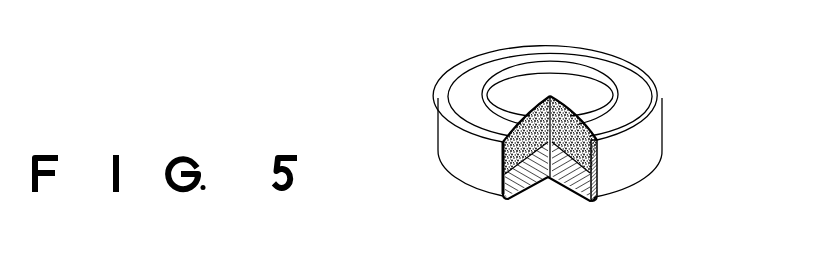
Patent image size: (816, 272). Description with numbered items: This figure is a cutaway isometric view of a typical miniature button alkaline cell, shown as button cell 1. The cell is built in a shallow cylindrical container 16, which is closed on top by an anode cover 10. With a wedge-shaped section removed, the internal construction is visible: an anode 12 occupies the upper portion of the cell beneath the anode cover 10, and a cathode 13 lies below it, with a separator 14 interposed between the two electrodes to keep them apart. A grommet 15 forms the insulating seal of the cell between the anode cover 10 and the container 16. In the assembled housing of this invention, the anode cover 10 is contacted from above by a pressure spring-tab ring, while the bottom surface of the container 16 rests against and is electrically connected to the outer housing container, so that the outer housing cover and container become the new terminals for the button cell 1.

The button cell 1 is at (586, 131).
The anode cover 10 is at (587, 78).
The anode 12 is at (541, 92).
The cathode 13 is at (511, 198).
The separator 14 is at (502, 183).
The grommet 15 is at (602, 168).
The shallow cylindrical container 16 is at (653, 137).